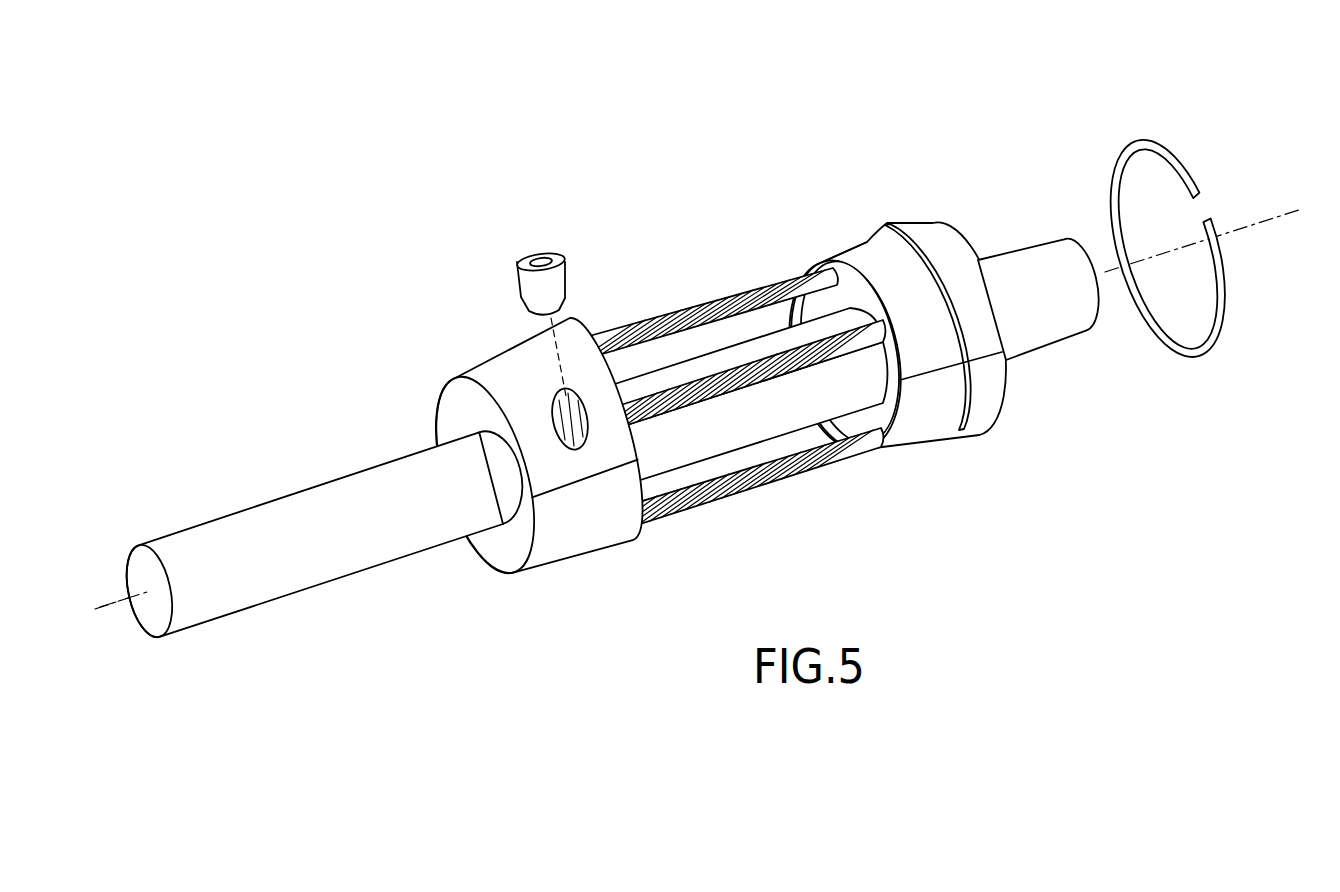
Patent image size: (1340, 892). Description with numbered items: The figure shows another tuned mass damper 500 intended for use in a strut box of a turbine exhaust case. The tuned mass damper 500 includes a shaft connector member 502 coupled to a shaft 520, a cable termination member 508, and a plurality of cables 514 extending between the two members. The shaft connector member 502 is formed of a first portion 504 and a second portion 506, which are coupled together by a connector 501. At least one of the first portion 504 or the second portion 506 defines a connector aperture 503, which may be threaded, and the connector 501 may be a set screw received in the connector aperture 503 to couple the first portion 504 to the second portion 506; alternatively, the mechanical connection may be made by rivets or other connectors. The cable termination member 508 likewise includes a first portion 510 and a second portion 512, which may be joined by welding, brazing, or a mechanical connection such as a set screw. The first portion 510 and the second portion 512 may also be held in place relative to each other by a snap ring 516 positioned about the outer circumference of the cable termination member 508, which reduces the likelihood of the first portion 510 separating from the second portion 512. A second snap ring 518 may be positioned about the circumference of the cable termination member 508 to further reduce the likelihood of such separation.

The tuned mass damper 500 is at (459, 74).
The connector 501 is at (560, 277).
The shaft connector member 502 is at (530, 441).
The connector aperture 503 is at (572, 414).
The first portion 504 is at (510, 375).
The second portion 506 is at (551, 548).
The cable termination member 508 is at (937, 238).
The first portion 510 is at (848, 254).
The second portion 512 is at (912, 428).
The cables 514 is at (718, 493).
The snap ring 516 is at (965, 432).
The second snap ring 518 is at (1218, 335).
The shaft 520 is at (241, 535).